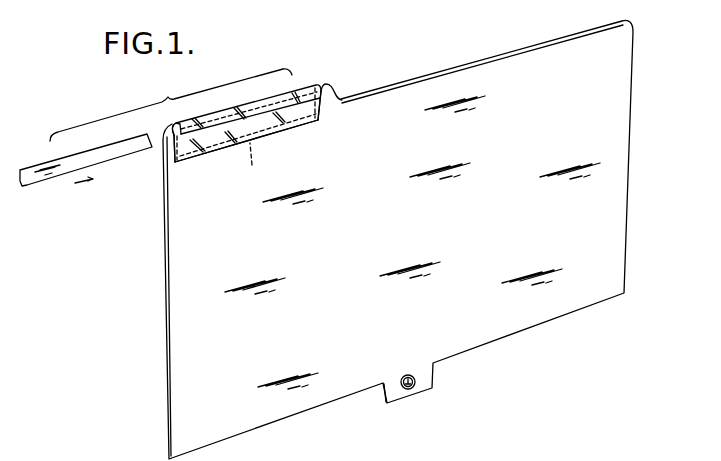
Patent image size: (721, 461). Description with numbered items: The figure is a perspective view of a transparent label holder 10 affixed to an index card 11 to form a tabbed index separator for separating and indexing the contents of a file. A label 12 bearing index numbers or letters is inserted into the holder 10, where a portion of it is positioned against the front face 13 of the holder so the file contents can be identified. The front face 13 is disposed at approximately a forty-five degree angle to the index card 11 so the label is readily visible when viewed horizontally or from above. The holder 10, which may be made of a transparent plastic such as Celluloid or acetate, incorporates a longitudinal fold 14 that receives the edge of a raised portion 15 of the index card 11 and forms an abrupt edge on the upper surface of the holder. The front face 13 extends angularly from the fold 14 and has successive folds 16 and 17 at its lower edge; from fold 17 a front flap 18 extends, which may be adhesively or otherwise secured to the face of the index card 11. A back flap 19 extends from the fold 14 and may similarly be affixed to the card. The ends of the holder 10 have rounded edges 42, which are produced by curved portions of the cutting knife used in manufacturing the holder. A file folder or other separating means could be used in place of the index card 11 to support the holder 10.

The label holder 10 is at (316, 78).
The index card 11 is at (397, 237).
The label 12 is at (44, 178).
The front face 13 is at (218, 127).
The longitudinal fold 14 is at (252, 105).
The raised portion 15 is at (334, 94).
The fold 16 is at (263, 122).
The fold 17 is at (171, 128).
The front flap 18 is at (300, 128).
The back flap 19 is at (256, 164).
The rounded edges 42 is at (320, 119).